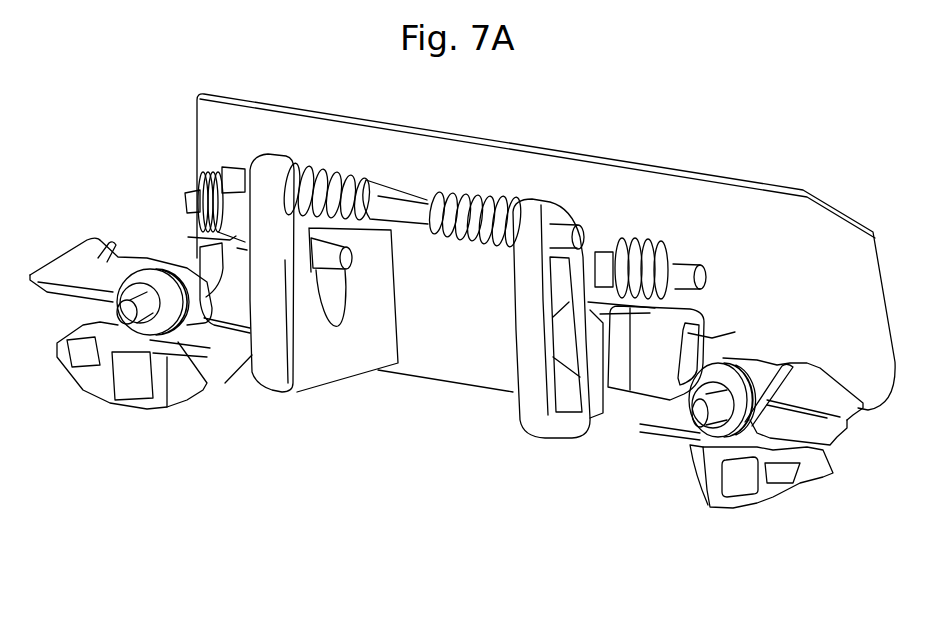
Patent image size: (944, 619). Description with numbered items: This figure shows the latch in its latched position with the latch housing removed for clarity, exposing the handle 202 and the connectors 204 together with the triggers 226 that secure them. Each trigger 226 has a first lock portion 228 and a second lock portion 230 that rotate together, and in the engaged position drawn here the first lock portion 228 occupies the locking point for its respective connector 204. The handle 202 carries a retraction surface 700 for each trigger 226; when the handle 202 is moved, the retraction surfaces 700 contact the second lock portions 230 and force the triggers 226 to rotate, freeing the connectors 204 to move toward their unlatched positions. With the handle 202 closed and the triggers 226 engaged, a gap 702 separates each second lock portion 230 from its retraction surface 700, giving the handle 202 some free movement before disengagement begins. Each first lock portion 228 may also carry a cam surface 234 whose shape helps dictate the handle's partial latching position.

The handle 202 is at (447, 376).
The connector 204 is at (131, 375).
The trigger 226 is at (227, 207).
The first lock portion 228 is at (227, 283).
The second lock portion 230 is at (350, 272).
The cam surface 234 is at (707, 337).
The retraction surface 700 is at (330, 308).
The gap 702 is at (315, 265).